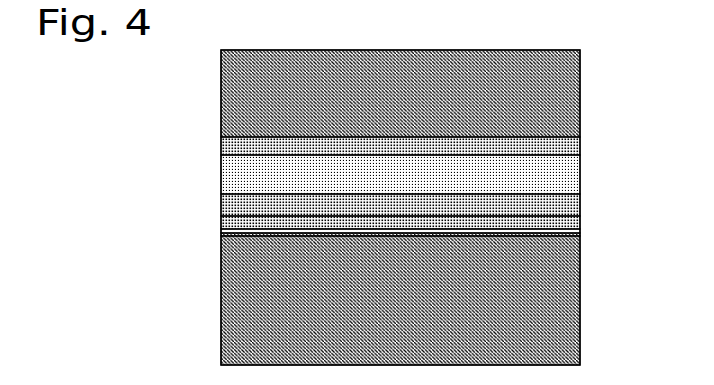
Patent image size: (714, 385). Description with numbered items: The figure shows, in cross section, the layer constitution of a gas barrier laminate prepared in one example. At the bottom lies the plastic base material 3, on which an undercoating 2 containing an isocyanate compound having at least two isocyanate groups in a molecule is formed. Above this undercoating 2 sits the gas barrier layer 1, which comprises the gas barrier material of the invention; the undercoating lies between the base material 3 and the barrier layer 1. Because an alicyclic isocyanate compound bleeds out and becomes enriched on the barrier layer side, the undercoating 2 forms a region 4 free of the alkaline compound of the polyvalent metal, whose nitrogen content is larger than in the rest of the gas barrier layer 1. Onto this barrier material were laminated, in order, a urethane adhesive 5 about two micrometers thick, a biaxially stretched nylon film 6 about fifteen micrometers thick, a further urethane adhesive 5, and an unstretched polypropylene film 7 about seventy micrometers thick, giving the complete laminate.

The gas barrier layer (B) 1 is at (582, 221).
The undercoating (A) containing isocyanate compound 2 is at (576, 236).
The plastic base material (P) 3 is at (582, 298).
The region (a) free of alkaline compound of polyvalent metal 4 is at (582, 231).
The urethane adhesive 5 is at (582, 148).
The biaxially stretched nylon film 6 is at (582, 176).
The unstretched polypropylene film 7 is at (582, 92).